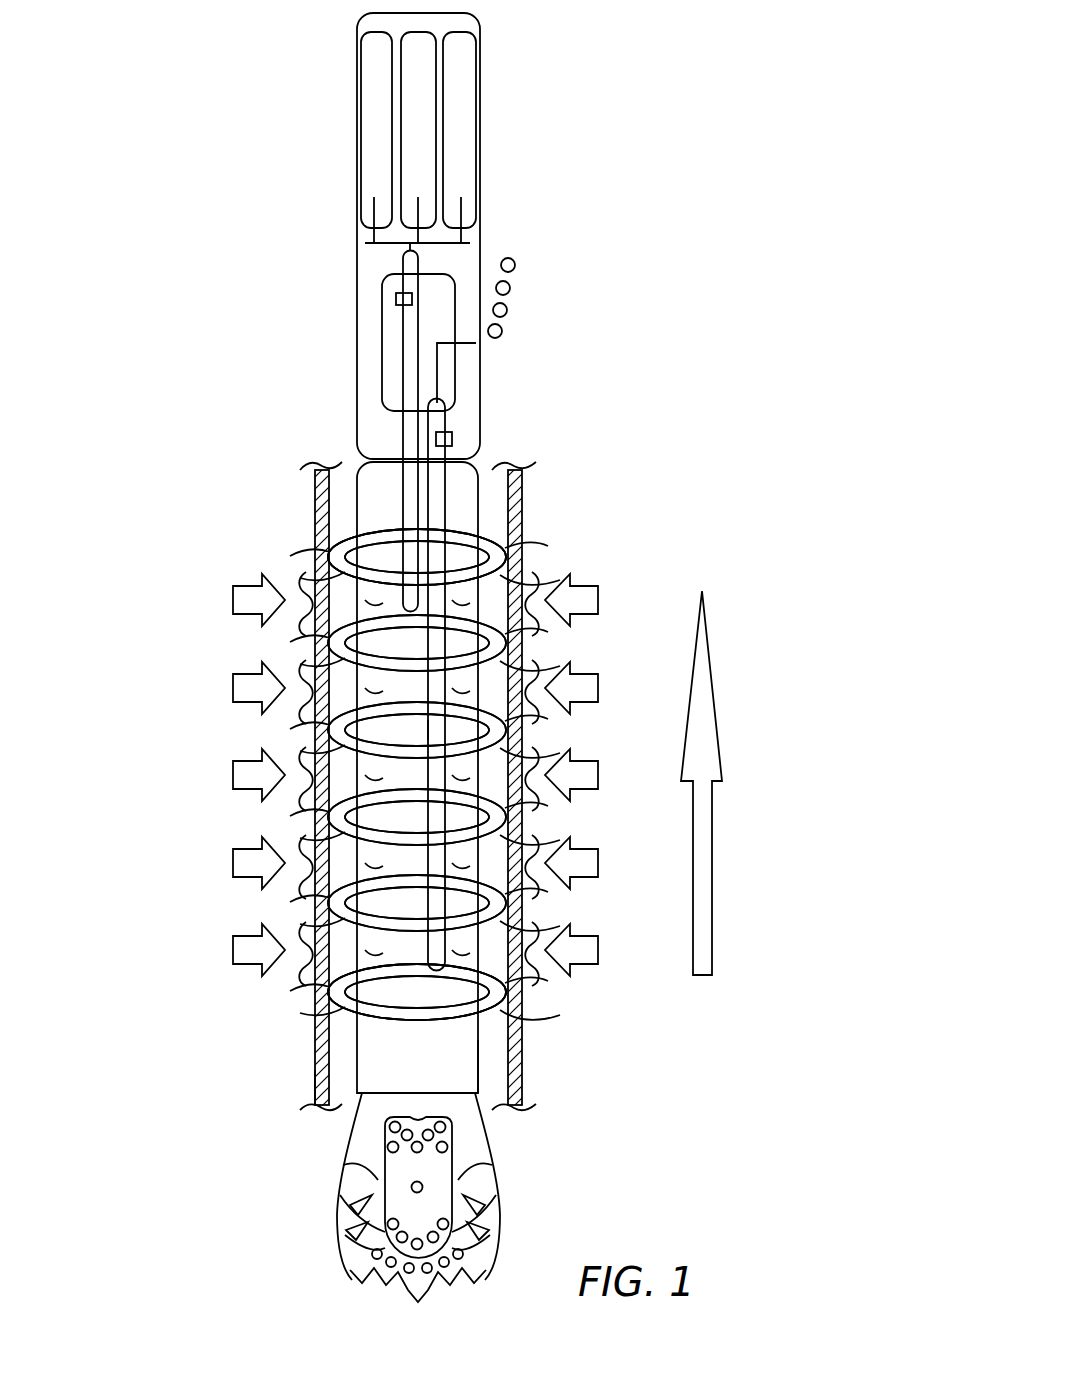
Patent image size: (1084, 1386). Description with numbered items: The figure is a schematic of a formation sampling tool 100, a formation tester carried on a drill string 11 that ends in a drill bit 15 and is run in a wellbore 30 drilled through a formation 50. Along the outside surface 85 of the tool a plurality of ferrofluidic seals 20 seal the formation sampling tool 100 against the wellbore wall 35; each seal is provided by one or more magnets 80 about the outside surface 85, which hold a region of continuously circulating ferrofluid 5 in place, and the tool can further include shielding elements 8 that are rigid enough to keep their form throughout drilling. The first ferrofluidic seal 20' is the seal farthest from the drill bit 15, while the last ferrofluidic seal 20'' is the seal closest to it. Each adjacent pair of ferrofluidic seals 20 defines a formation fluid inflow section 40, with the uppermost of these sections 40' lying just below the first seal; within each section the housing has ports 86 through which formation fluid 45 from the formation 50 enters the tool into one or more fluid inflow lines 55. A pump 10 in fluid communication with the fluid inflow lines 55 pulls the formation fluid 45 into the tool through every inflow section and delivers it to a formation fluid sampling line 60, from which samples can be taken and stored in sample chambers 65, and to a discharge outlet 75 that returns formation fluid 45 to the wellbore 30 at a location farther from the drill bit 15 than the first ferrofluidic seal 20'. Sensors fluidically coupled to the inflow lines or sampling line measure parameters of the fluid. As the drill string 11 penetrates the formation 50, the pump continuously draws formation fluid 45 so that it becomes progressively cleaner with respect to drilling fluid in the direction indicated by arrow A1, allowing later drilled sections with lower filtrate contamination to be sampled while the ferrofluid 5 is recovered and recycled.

The formation sampling tool 100 is at (583, 26).
The sample chambers 65 is at (410, 60).
The formation fluid sampling line 60 is at (403, 322).
The discharge outlet 75 is at (478, 343).
The ferrofluid 5 is at (396, 299).
The wellbore 30 is at (342, 450).
The wellbore wall 35 is at (322, 492).
The pump 10 is at (668, 538).
The ferrofluidic seals 20 is at (485, 767).
The shielding elements 8 is at (468, 530).
The magnets 80 is at (482, 542).
The first ferrofluidic seal 20' is at (372, 555).
The last ferrofluidic seal 20'' is at (384, 992).
The ports 86 is at (318, 560).
The formation fluid 45 is at (233, 599).
The upper perforation flow 40' is at (382, 611).
The formation fluid inflow section 40 is at (382, 830).
The fluid inflow lines 55 is at (430, 733).
The formation 50 is at (826, 650).
The arrow A1 is at (713, 829).
The outside surface 85 is at (480, 1055).
The drill string 11 is at (315, 1085).
The drill bit 15 is at (500, 1225).